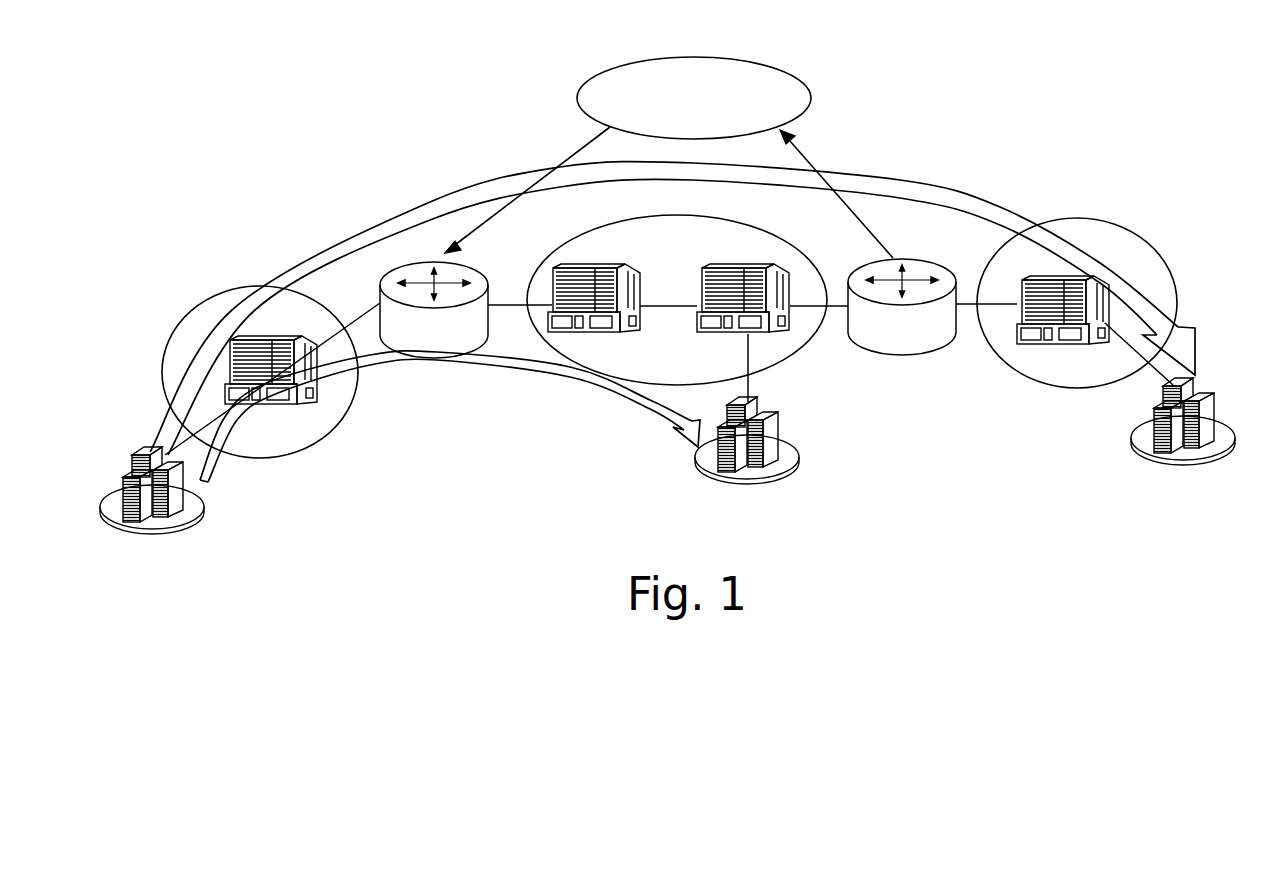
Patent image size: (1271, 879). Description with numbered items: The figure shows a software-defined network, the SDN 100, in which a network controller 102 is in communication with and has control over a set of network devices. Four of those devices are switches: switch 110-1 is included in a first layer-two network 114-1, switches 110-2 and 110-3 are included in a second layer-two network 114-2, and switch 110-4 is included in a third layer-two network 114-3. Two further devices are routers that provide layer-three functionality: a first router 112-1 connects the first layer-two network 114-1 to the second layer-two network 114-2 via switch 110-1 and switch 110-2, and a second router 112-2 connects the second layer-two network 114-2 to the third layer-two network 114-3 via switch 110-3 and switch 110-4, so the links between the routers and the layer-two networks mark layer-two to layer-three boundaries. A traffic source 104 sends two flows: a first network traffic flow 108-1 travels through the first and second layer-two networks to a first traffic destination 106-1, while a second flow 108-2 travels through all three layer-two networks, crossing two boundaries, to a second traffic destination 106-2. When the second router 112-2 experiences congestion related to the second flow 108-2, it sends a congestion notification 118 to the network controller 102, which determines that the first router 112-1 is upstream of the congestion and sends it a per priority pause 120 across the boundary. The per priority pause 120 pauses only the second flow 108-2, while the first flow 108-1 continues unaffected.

The SDN 100 is at (354, 62).
The network controller 102 is at (811, 98).
The traffic source 104 is at (200, 520).
The first traffic destination 106-1 is at (767, 480).
The second traffic destination 106-2 is at (1220, 460).
The first network traffic flow 108-1 is at (495, 363).
The second network traffic flow 108-2 is at (898, 178).
The switch 110-1 is at (226, 336).
The switch 110-2 is at (590, 333).
The switch 110-3 is at (773, 268).
The switch 110-4 is at (1060, 277).
The first router 112-1 is at (396, 347).
The second router 112-2 is at (918, 355).
The first Layer 2 network 114-1 is at (328, 442).
The second Layer 2 network 114-2 is at (797, 349).
The third Layer 2 network 114-3 is at (1073, 387).
The congestion notification 118 is at (868, 233).
The per priority pause 120 is at (486, 223).